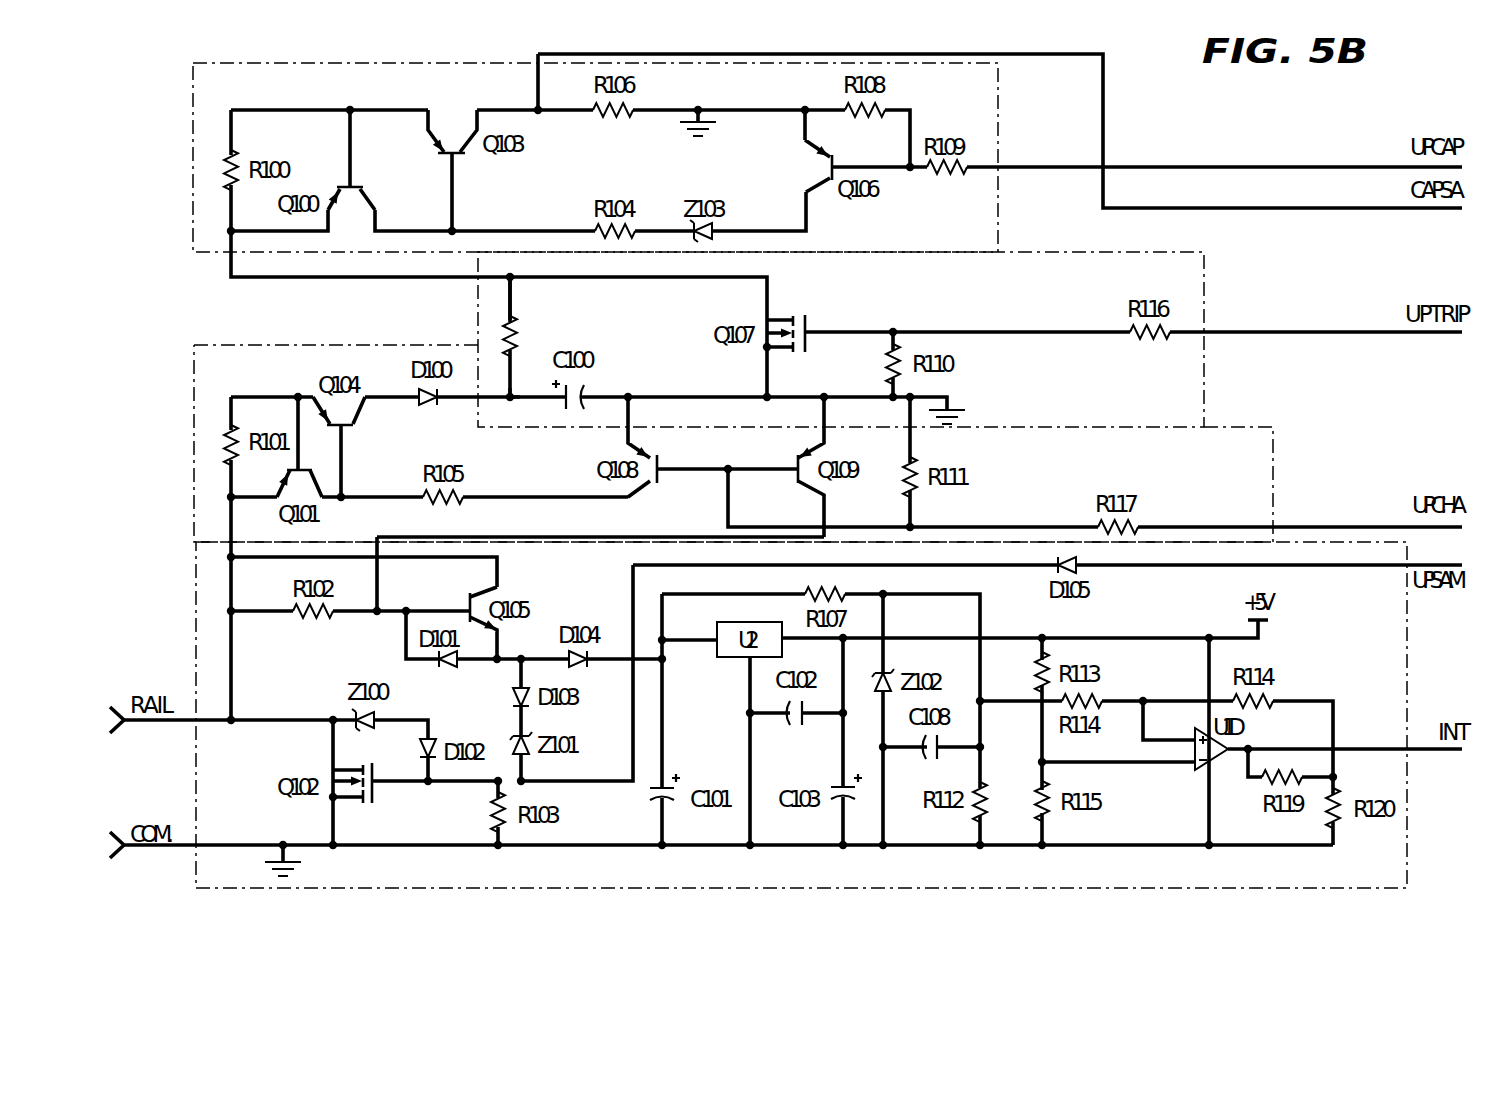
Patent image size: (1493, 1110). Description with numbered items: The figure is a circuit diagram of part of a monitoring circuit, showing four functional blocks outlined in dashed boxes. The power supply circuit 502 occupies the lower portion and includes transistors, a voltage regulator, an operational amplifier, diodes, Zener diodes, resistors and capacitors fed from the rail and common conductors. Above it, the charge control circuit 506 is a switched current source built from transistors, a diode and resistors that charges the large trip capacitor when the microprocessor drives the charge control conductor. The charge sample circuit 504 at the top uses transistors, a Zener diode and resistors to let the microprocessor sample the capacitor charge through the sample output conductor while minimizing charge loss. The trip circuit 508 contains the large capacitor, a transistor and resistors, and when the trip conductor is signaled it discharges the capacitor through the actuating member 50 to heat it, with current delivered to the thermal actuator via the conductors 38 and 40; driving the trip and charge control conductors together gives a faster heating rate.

The conductor 38 is at (510, 300).
The conductor 40 is at (511, 380).
The actuating member 50 is at (504, 332).
The power supply circuit 502 is at (1407, 618).
The charge sample circuit 504 is at (998, 110).
The charge control circuit 506 is at (1273, 443).
The trip circuit 508 is at (1204, 280).